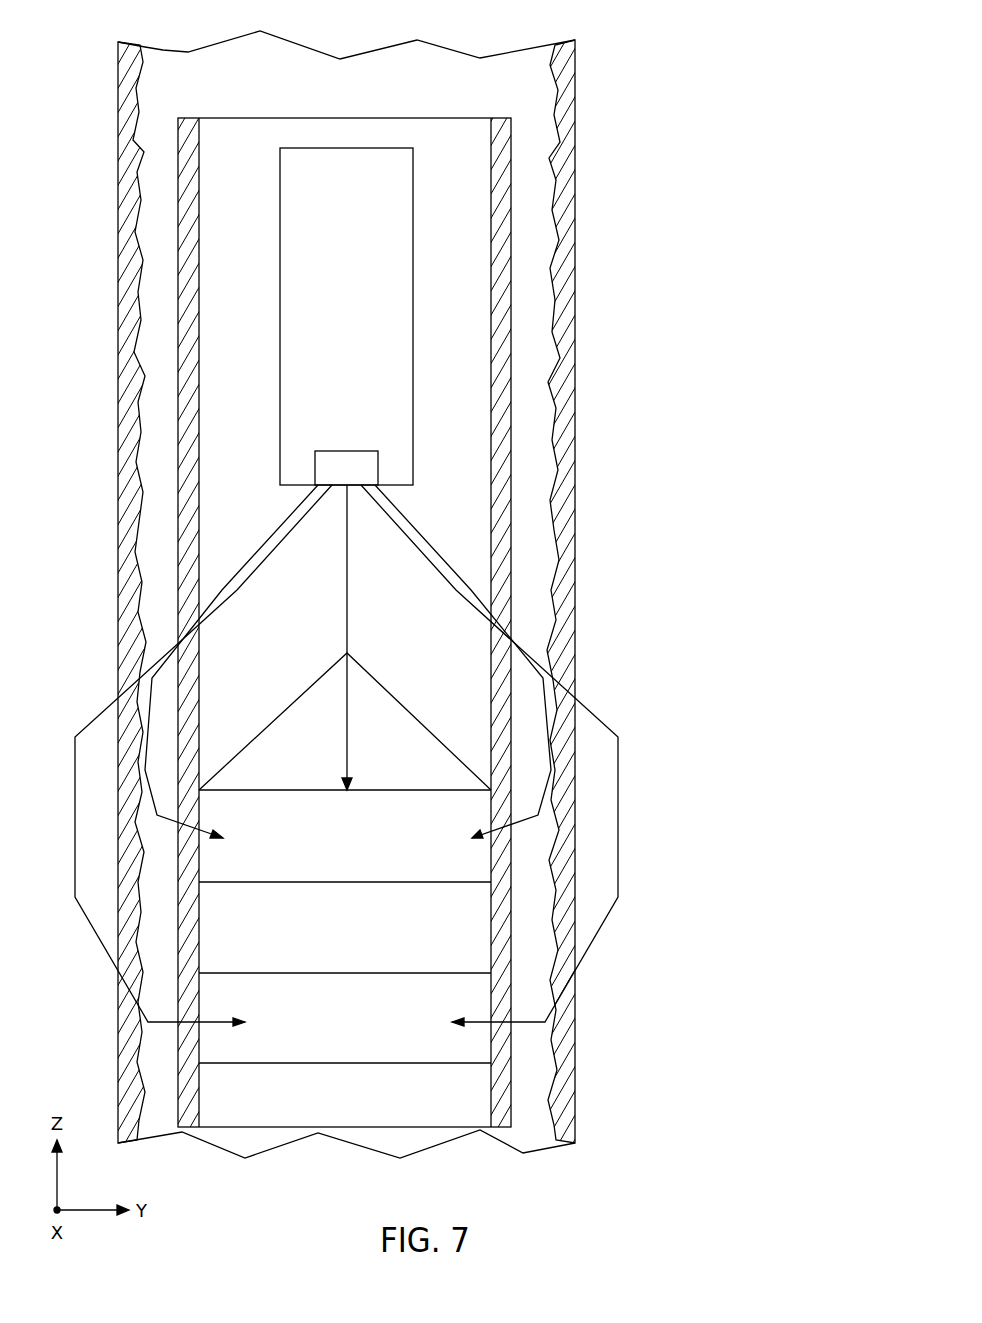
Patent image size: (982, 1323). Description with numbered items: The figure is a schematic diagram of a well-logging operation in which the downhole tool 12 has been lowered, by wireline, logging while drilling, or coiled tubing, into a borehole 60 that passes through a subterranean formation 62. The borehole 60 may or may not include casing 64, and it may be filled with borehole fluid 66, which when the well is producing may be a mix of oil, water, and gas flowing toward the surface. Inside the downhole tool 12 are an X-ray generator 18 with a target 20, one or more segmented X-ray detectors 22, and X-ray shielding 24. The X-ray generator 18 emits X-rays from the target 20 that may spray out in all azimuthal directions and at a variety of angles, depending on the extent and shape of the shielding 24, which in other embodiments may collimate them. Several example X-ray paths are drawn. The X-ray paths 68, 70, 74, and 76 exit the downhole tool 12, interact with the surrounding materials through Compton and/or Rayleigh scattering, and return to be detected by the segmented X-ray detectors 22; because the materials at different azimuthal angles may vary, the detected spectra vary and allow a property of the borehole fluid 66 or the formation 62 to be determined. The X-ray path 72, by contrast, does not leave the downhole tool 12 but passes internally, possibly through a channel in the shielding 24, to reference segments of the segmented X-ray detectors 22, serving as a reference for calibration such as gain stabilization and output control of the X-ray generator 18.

The downhole tool 12 is at (282, 117).
The X-ray generator 18 is at (414, 181).
The target 20 is at (349, 452).
The segmented X-ray detector 22 is at (263, 834).
The X-ray shielding 24 is at (388, 693).
The borehole 60 is at (582, 58).
The subterranean formation 62 is at (714, 97).
The casing 64 is at (570, 123).
The borehole fluid 66 is at (546, 314).
The X-ray path 68 is at (77, 732).
The X-ray path 70 is at (259, 568).
The X-ray path 72 is at (348, 580).
The X-ray path 74 is at (453, 587).
The X-ray path 76 is at (619, 733).